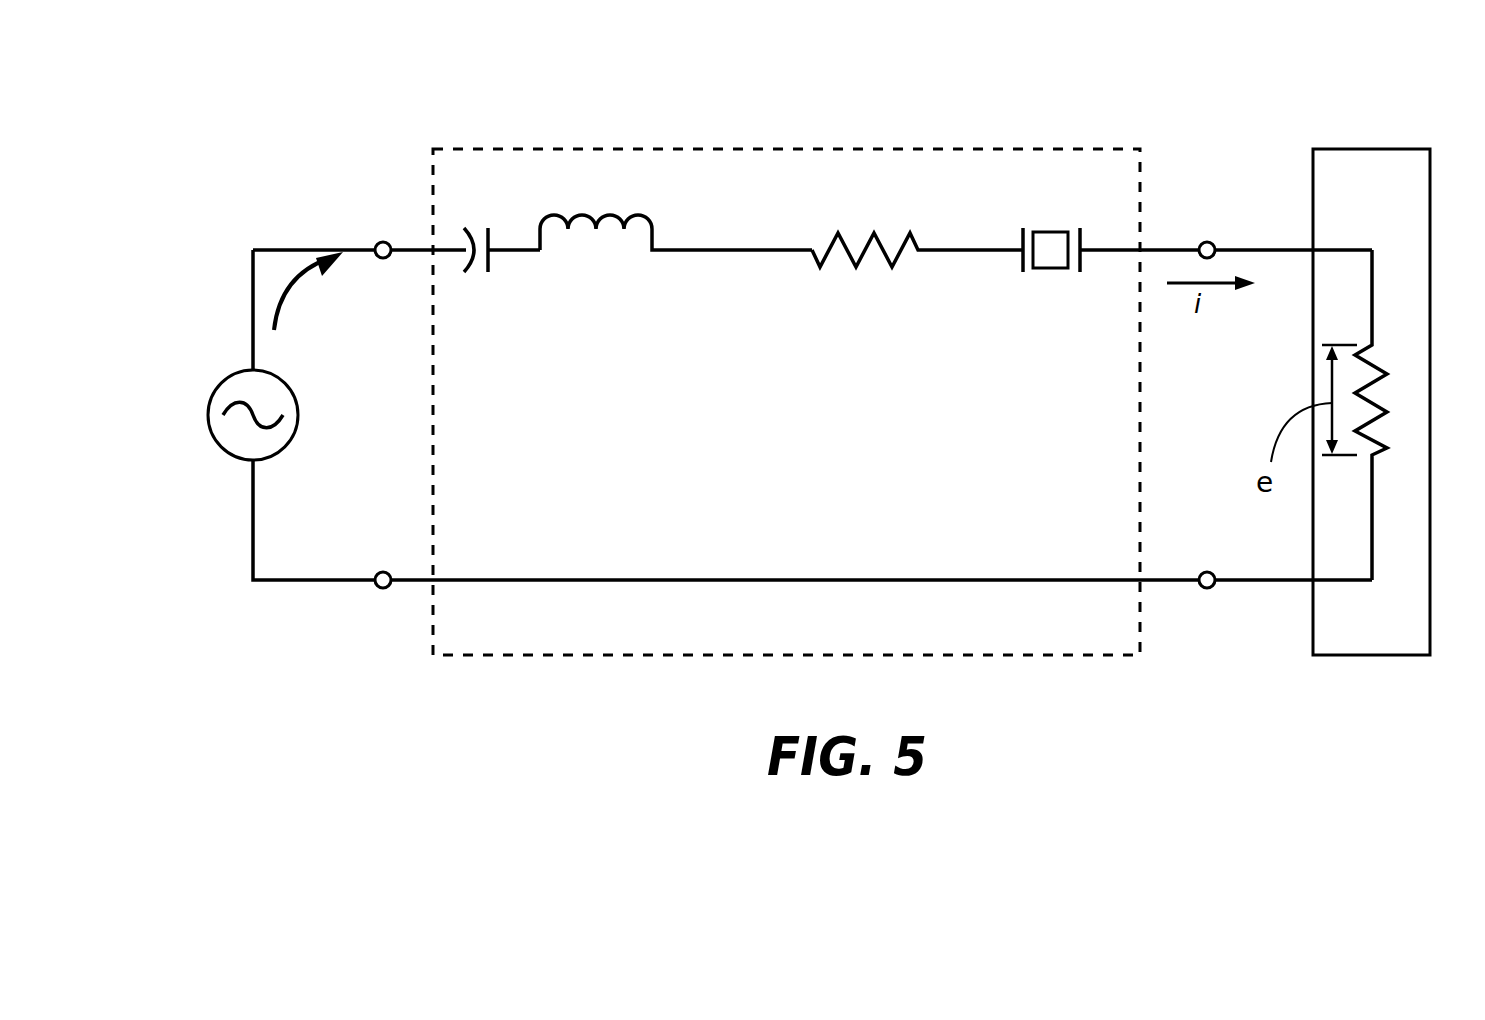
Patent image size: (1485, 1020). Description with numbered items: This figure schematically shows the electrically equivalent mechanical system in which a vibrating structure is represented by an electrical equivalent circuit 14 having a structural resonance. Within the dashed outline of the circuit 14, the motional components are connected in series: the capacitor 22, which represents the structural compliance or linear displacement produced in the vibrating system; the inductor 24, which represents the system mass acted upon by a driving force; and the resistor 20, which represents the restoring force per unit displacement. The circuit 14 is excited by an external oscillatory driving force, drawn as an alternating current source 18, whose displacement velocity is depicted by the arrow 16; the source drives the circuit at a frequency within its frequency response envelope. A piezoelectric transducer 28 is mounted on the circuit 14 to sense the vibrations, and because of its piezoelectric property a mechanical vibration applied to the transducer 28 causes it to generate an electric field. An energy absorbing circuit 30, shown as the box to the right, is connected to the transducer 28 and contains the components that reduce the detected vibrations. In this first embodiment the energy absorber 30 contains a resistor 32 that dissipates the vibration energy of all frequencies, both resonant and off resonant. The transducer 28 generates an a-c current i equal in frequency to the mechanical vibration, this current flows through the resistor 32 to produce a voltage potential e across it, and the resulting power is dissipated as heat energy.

The electrical equivalent circuit 14 is at (782, 148).
The arrow 16 is at (292, 300).
The alternating current source 18 is at (208, 412).
The resistor 20 is at (866, 255).
The capacitor 22 is at (489, 270).
The inductor 24 is at (598, 229).
The piezoelectric transducer 28 is at (1058, 268).
The energy absorbing circuit 30 is at (1359, 148).
The resistor 32 is at (1388, 412).